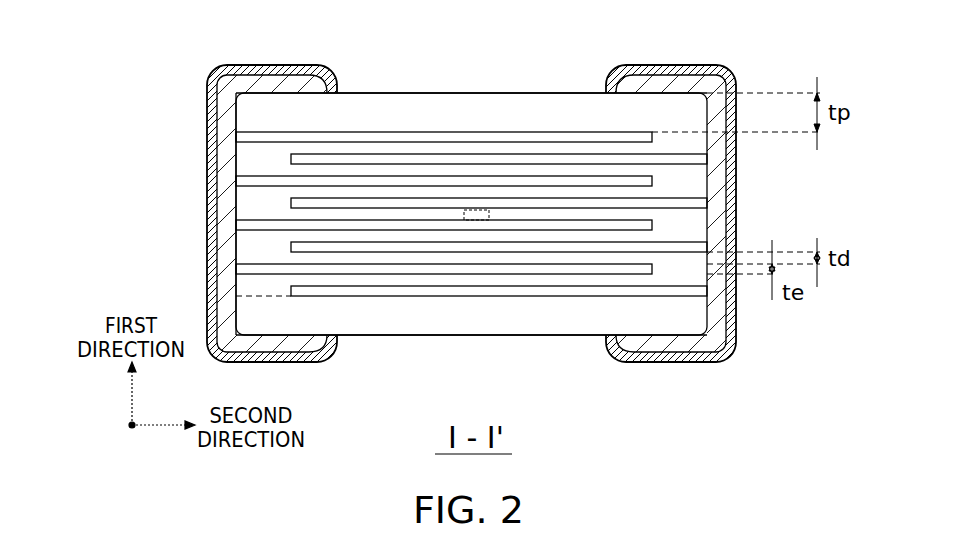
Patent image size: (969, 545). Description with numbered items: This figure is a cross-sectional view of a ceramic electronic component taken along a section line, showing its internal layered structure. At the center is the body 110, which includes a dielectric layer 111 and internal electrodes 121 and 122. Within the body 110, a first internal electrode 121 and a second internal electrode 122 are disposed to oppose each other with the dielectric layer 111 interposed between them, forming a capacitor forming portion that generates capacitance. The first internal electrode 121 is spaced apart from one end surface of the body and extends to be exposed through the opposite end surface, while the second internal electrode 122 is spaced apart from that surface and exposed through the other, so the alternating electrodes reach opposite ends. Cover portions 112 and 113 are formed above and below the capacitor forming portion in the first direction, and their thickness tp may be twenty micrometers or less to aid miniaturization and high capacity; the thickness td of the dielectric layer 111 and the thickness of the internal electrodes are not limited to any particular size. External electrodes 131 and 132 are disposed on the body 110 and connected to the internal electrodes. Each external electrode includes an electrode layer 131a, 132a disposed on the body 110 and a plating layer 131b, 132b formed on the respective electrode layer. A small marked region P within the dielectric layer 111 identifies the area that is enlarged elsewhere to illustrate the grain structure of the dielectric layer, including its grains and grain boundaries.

The body 110 is at (403, 93).
The dielectric layer 111 is at (356, 170).
The cover portion 112 is at (473, 110).
The cover portion 113 is at (387, 318).
The first internal electrode 121 is at (542, 132).
The second internal electrode 122 is at (598, 154).
The external electrode 131 is at (197, 213).
The electrode layer 131a is at (207, 143).
The plating layer 131b is at (217, 171).
The external electrode 132 is at (747, 213).
The electrode layer 132a is at (727, 187).
The plating layer 132b is at (738, 212).
The region P is at (476, 214).